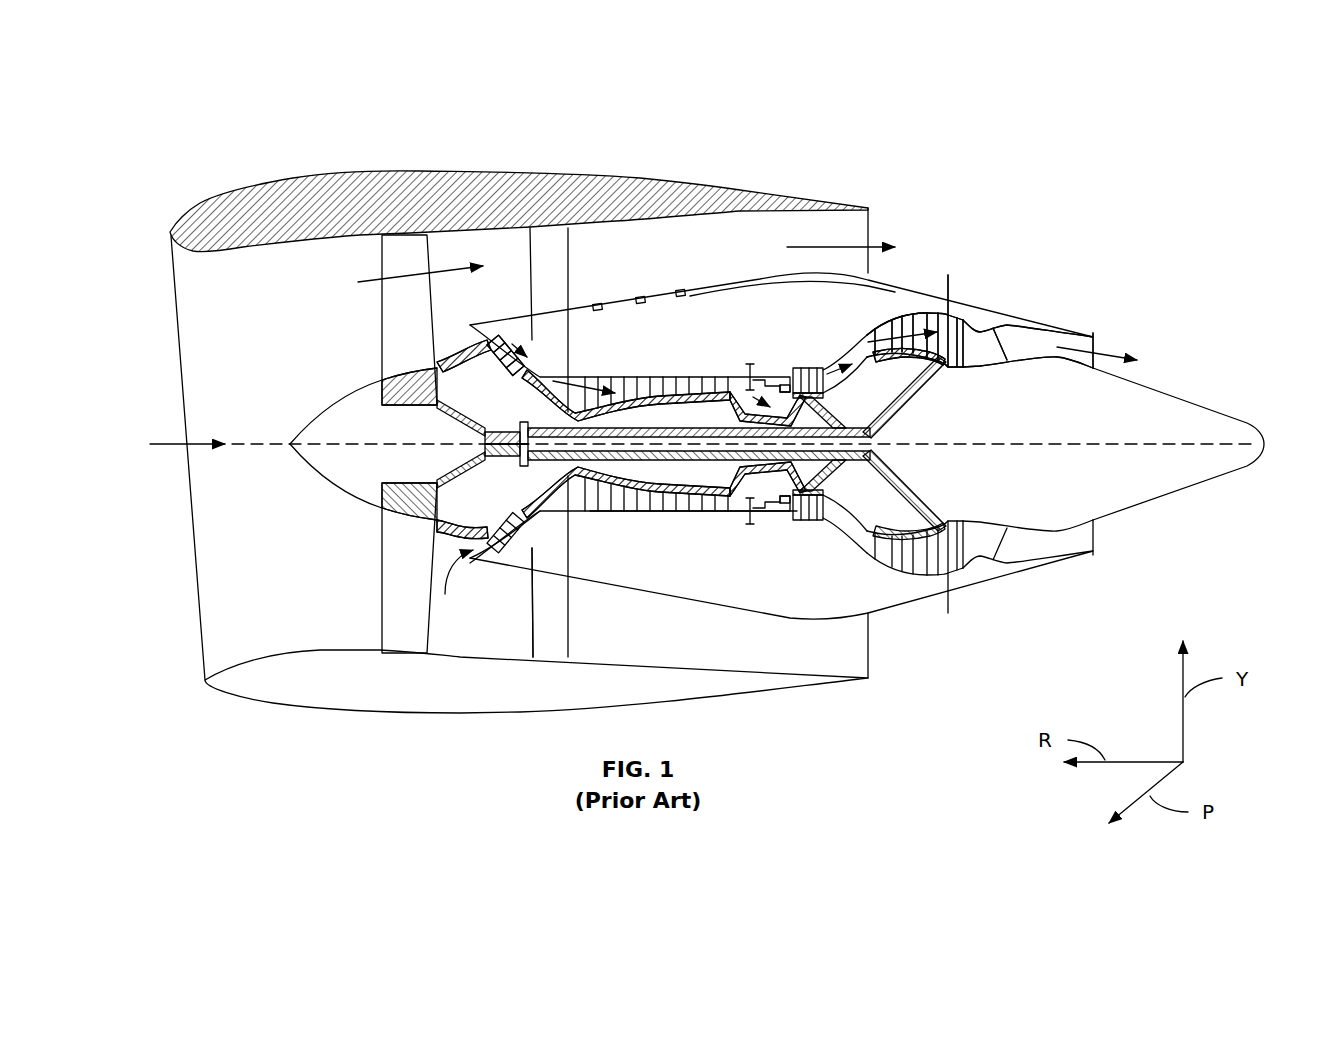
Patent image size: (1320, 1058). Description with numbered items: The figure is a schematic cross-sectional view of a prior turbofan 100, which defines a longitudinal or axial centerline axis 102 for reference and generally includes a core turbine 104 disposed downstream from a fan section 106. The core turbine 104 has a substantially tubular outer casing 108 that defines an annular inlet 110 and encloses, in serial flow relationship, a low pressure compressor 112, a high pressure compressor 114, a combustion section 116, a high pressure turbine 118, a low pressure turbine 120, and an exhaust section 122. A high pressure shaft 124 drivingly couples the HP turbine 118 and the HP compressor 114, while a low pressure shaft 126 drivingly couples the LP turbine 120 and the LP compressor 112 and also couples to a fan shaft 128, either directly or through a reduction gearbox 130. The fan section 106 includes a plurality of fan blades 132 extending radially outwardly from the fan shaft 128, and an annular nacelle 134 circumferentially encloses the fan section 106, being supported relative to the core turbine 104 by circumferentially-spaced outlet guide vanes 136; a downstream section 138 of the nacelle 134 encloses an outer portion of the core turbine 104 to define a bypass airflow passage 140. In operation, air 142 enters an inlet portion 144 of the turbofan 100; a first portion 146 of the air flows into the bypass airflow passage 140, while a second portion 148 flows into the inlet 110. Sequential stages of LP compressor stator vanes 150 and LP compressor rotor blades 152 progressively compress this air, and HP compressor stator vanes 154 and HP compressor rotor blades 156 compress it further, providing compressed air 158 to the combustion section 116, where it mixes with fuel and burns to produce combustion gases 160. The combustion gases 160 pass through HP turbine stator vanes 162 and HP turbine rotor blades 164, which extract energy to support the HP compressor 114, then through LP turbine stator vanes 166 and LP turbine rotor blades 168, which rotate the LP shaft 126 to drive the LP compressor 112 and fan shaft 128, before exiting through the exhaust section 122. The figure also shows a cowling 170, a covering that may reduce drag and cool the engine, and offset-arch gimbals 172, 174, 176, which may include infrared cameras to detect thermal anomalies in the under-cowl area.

The turbofan 100 is at (1005, 180).
The longitudinal or axial centerline axis 102 is at (1018, 442).
The core turbine 104 is at (688, 332).
The fan section 106 is at (302, 306).
The outer casing 108 is at (715, 602).
The annular inlet 110 is at (488, 565).
The low pressure compressor 112 is at (518, 530).
The high pressure compressor 114 is at (605, 516).
The combustion section 116 is at (760, 512).
The high pressure turbine 118 is at (852, 498).
The low pressure turbine 120 is at (952, 572).
The exhaust section 122 is at (1097, 340).
The high pressure shaft 124 is at (822, 408).
The low pressure shaft 126 is at (537, 432).
The fan shaft 128 is at (433, 410).
The reduction gearbox 130 is at (522, 466).
The fan blades 132 is at (381, 579).
The nacelle 134 is at (423, 716).
The outlet guide vanes 136 is at (570, 256).
The downstream section of the nacelle 138 is at (777, 186).
The bypass airflow passage 140 is at (665, 275).
The air 142 is at (206, 432).
The inlet portion 144 is at (204, 652).
The first portion of the air 146 is at (395, 268).
The second portion of the air 148 is at (453, 340).
The LP compressor stator vanes 150 is at (490, 552).
The LP compressor rotor blades 152 is at (510, 556).
The HP compressor stator vanes 154 is at (690, 505).
The HP compressor rotor blades 156 is at (703, 511).
The compressed air 158 is at (736, 384).
The combustion gases 160 is at (808, 370).
The HP turbine stator vanes 162 is at (802, 514).
The HP turbine rotor blades 164 is at (807, 492).
The LP turbine stator vanes 166 is at (870, 333).
The LP turbine rotor blades 168 is at (888, 320).
The cowling 170 is at (760, 279).
The offset-arch gimbal 172 is at (597, 305).
The offset-arch gimbal 174 is at (640, 297).
The offset-arch gimbal 176 is at (680, 290).